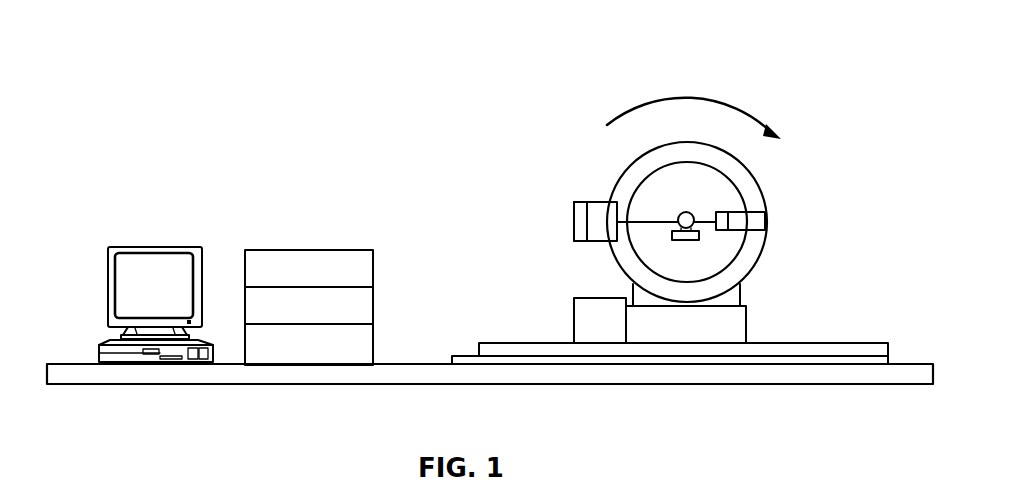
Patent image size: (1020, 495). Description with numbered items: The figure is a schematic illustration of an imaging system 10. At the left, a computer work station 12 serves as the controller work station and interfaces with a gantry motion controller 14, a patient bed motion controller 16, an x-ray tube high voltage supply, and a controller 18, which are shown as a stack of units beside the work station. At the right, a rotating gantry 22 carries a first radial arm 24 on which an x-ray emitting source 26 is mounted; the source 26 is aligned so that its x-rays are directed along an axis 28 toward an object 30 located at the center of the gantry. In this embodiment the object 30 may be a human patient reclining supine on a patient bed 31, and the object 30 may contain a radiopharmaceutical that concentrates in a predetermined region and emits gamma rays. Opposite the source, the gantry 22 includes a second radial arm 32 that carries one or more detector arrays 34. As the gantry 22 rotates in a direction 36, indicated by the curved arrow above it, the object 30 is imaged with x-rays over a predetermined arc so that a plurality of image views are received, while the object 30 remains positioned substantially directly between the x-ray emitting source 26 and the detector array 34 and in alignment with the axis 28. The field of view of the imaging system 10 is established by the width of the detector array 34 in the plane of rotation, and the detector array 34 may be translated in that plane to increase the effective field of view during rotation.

The imaging system 10 is at (260, 66).
The computer work station 12 is at (155, 247).
The gantry motion controller 14 is at (373, 269).
The patient bed motion controller 16 is at (373, 307).
The controller 18 is at (373, 345).
The rotating gantry 22 is at (757, 180).
The first radial arm 24 is at (587, 224).
The x-ray emitting source 26 is at (574, 220).
The axis 28 is at (650, 222).
The object 30 is at (678, 216).
The patient bed 31 is at (695, 240).
The second radial arm 32 is at (766, 221).
The detector array 34 is at (723, 212).
The direction 36 is at (687, 97).